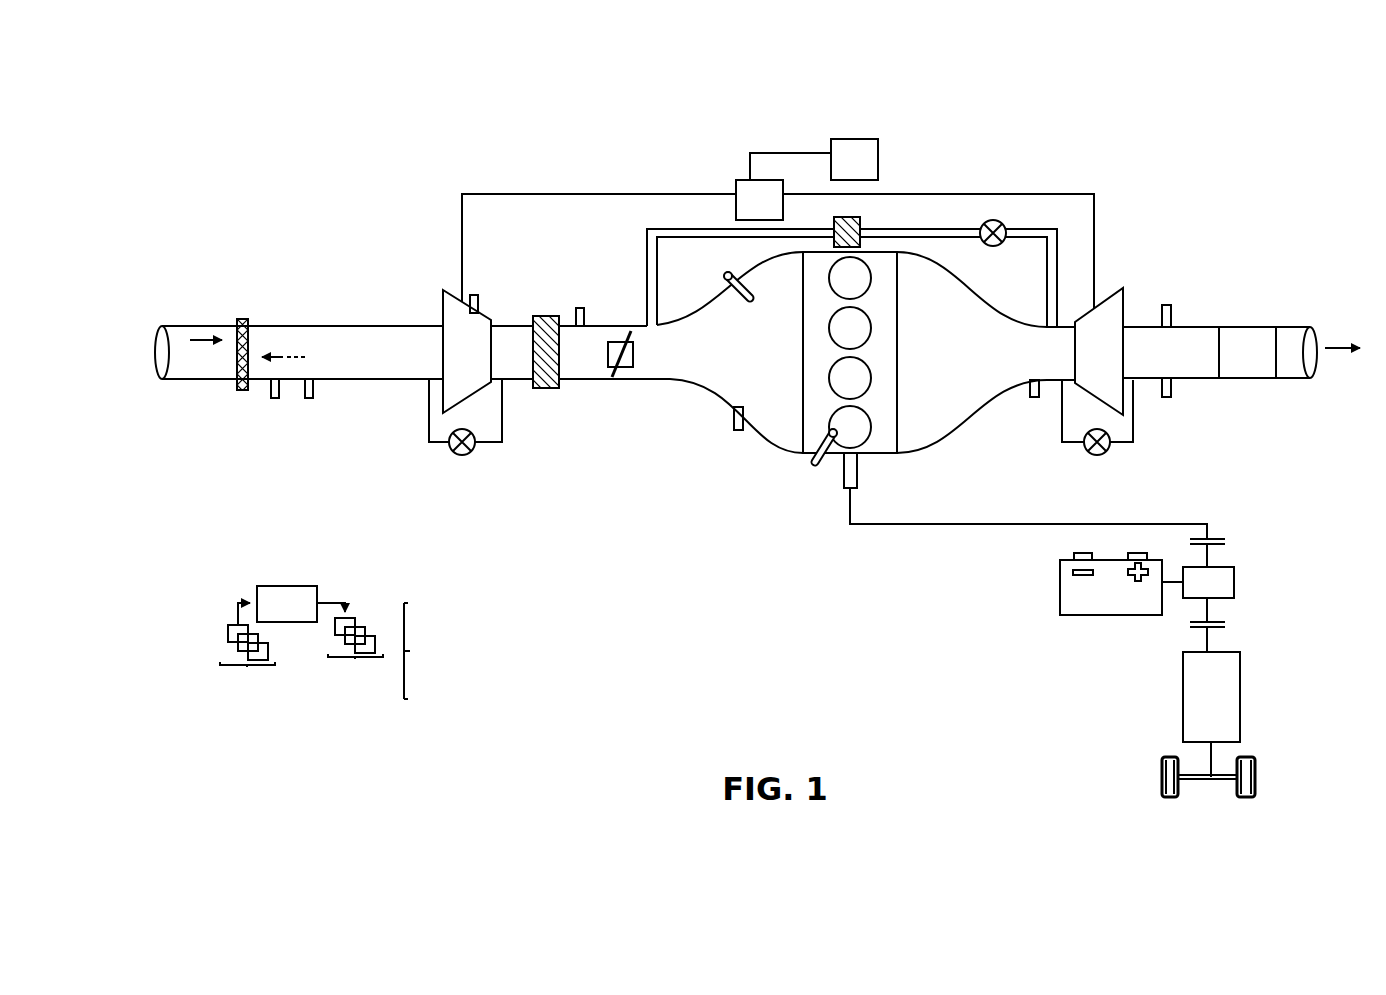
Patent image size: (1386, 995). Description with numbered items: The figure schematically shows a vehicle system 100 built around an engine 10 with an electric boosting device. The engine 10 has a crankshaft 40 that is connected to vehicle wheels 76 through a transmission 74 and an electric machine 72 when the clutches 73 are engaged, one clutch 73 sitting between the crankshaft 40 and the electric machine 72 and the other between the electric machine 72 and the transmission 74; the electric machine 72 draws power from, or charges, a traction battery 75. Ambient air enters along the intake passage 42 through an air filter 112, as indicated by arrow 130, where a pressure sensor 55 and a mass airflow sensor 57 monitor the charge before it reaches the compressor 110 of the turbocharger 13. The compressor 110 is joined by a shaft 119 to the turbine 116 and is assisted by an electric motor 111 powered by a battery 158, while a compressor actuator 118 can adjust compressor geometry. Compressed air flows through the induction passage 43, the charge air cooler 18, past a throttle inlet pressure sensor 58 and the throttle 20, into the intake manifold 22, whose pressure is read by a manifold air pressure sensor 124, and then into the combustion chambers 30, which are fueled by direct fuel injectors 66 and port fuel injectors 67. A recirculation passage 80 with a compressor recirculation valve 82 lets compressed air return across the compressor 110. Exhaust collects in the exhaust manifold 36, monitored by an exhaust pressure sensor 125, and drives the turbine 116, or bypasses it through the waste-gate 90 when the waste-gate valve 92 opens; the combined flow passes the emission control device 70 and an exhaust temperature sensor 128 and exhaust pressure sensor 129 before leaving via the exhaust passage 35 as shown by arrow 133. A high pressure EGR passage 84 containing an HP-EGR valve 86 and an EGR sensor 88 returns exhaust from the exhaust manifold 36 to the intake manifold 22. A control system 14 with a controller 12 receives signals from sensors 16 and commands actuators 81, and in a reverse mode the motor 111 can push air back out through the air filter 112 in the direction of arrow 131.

The vehicle system 100 is at (222, 123).
The engine 10 is at (636, 466).
The controller 12 is at (287, 604).
The control system 14 is at (345, 648).
The sensors 16 is at (245, 656).
The actuators 81 is at (354, 656).
The turbocharger 13 is at (1138, 286).
The charge air cooler 18 is at (543, 316).
The throttle 20 is at (634, 360).
The intake manifold 22 is at (730, 352).
The combustion chambers 30 is at (871, 280).
The exhaust passage 35 is at (1292, 326).
The exhaust manifold 36 is at (986, 352).
The crankshaft 40 is at (858, 476).
The intake passage 42 is at (168, 380).
The induction passage 43 is at (508, 326).
The pressure sensor 55 is at (275, 398).
The mass airflow sensor 57 is at (309, 398).
The throttle inlet pressure sensor 58 is at (583, 308).
The direct fuel injectors 66 is at (814, 465).
The port fuel injectors 67 is at (730, 272).
The emission control device 70 is at (1265, 378).
The electric machine 72 is at (1234, 582).
The clutches 73 is at (1228, 541).
The transmission 74 is at (1211, 714).
The traction battery 75 is at (1115, 558).
The vehicle wheels 76 is at (1162, 778).
The recirculation passage 80 is at (503, 430).
The compressor recirculation valve 82 is at (457, 452).
The high pressure EGR passage 84 is at (678, 240).
The HP-EGR valve 86 is at (990, 247).
The EGR sensor 88 is at (855, 217).
The waste-gate 90 is at (1062, 428).
The waste-gate valve 92 is at (1094, 455).
The compressor 110 is at (467, 351).
The electric motor 111 is at (778, 244).
The air filter 112 is at (240, 319).
The turbine 116 is at (1099, 351).
The compressor actuator 118 is at (478, 298).
The shaft 119 is at (1048, 194).
The manifold air pressure sensor 124 is at (738, 430).
The exhaust pressure sensor 125 is at (1032, 398).
The exhaust temperature sensor 128 is at (1166, 397).
The exhaust pressure sensor 129 is at (1166, 305).
The arrow indicating first air flow direction 130 is at (205, 340).
The arrow indicating reversed air flow direction 131 is at (285, 356).
The arrow indicating exhaust release 133 is at (1340, 349).
The battery 158 is at (814, 159).